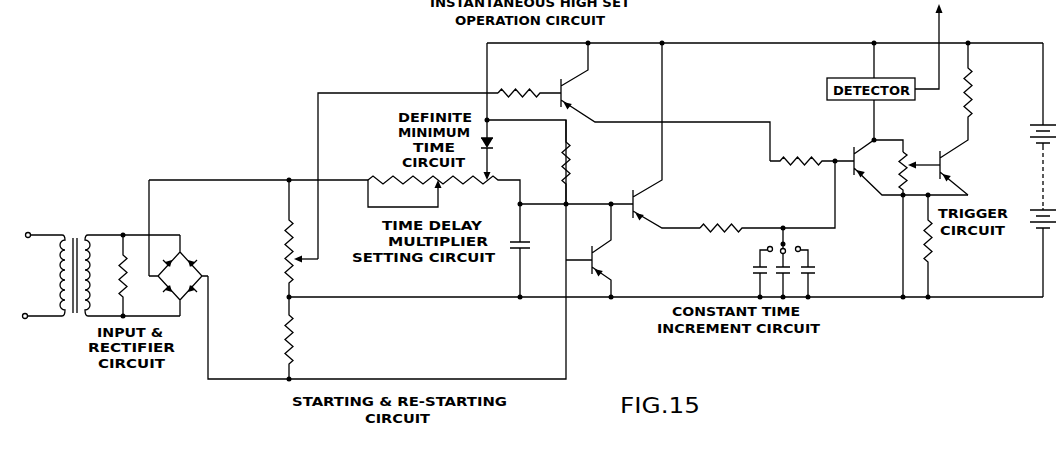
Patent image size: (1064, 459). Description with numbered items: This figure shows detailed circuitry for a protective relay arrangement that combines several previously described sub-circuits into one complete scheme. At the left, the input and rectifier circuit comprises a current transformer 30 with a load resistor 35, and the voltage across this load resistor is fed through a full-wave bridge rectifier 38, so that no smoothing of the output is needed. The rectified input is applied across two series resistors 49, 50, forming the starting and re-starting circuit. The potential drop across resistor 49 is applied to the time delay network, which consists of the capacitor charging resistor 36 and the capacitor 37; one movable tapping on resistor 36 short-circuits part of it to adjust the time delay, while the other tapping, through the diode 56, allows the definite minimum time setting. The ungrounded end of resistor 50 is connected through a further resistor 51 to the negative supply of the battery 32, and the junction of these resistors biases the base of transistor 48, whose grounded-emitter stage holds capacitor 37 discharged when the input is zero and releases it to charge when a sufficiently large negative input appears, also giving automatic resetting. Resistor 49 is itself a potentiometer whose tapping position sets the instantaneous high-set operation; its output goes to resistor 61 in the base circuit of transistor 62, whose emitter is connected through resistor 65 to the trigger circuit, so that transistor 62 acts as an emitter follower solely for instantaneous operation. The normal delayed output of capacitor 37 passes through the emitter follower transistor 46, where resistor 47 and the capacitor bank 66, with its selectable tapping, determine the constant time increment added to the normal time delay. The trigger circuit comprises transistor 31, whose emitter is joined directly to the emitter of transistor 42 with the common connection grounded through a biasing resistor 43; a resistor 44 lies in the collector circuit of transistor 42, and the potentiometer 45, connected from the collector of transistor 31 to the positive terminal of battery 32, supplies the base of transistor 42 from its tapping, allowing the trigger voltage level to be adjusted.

The current transformer 30 is at (82, 335).
The load resistor 35 is at (124, 284).
The full-wave bridge rectifier 38 is at (215, 261).
The potentiometer resistor 49 is at (278, 260).
The resistor 50 is at (278, 343).
The capacitor charging resistor 36 is at (480, 183).
The diode 56 is at (515, 153).
The resistor 61 is at (530, 85).
The transistor 62 is at (595, 101).
The resistor 51 is at (594, 168).
The capacitor 37 is at (551, 253).
The emitter follower transistor 46 is at (666, 135).
The transistor 48 is at (594, 250).
The resistor 47 is at (732, 220).
The resistor 65 is at (813, 153).
The capacitor bank 66 is at (841, 275).
The transistor 31 is at (863, 196).
The potentiometer 45 is at (895, 176).
The transistor 42 is at (973, 176).
The resistor 44 is at (981, 80).
The biasing resistor 43 is at (957, 261).
The battery 32 is at (1030, 183).